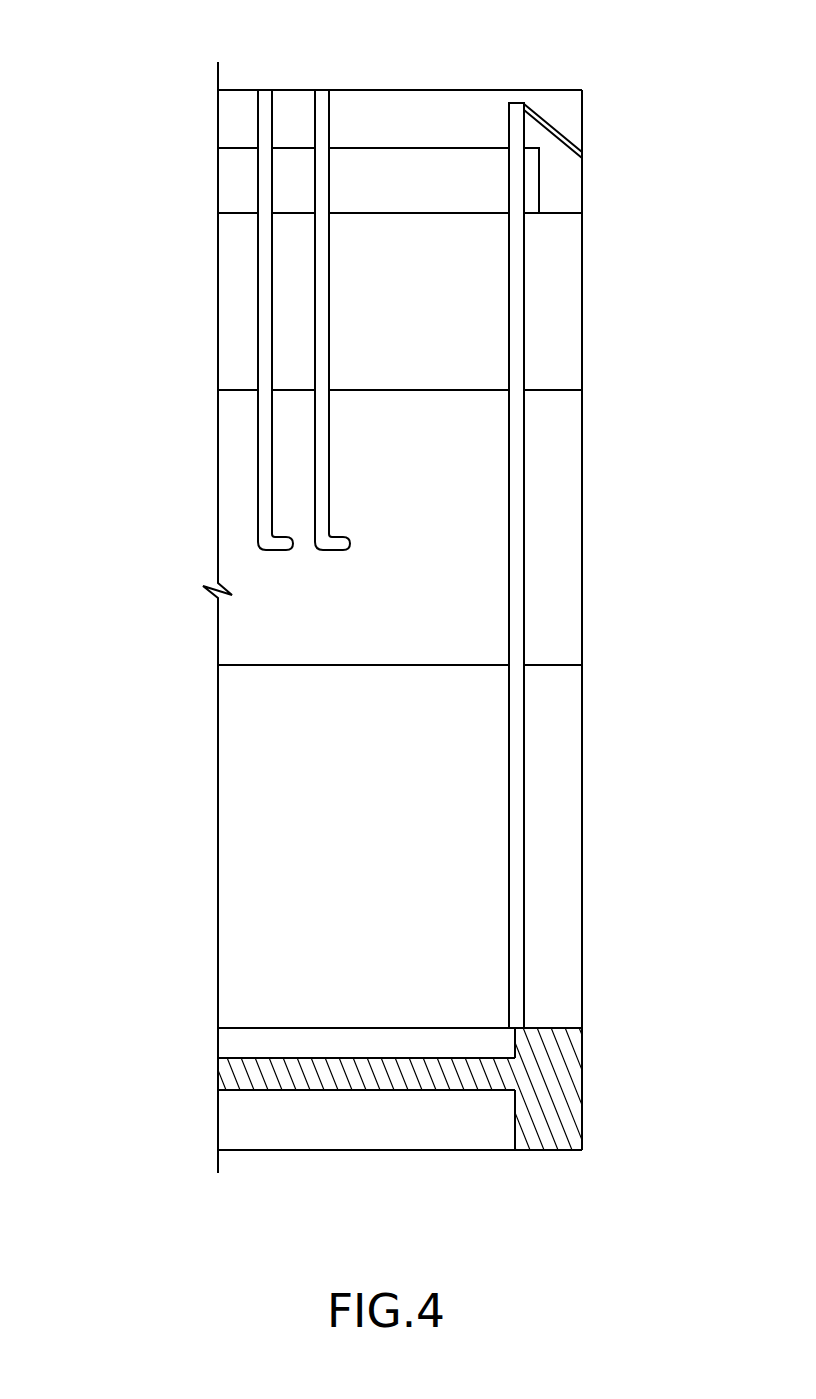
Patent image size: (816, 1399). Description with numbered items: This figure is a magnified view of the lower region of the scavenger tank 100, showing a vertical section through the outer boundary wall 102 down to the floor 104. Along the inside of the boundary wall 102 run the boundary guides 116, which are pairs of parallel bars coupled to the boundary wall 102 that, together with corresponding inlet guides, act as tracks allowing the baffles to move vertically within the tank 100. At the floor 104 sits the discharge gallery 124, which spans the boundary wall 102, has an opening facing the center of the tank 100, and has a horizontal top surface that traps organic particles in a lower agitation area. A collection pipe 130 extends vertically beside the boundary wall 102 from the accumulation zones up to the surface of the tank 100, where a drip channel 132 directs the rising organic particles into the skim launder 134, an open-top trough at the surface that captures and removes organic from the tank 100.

The scavenger tank 100 is at (137, 78).
The outer boundary wall 102 is at (590, 532).
The floor 104 is at (262, 1157).
The boundary guides 116 is at (338, 558).
The discharge gallery 124 is at (548, 1072).
The collection pipes 130 is at (476, 348).
The drip channel 132 is at (565, 123).
The skim launder 134 is at (548, 195).